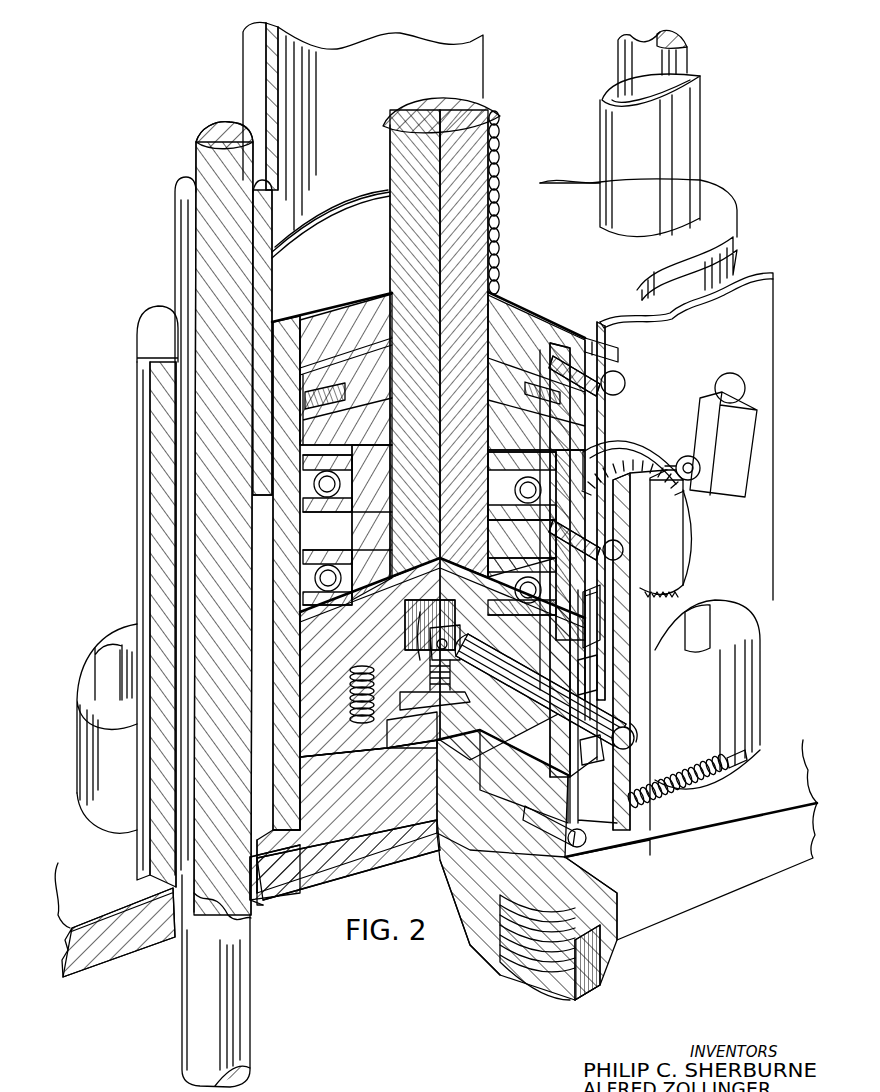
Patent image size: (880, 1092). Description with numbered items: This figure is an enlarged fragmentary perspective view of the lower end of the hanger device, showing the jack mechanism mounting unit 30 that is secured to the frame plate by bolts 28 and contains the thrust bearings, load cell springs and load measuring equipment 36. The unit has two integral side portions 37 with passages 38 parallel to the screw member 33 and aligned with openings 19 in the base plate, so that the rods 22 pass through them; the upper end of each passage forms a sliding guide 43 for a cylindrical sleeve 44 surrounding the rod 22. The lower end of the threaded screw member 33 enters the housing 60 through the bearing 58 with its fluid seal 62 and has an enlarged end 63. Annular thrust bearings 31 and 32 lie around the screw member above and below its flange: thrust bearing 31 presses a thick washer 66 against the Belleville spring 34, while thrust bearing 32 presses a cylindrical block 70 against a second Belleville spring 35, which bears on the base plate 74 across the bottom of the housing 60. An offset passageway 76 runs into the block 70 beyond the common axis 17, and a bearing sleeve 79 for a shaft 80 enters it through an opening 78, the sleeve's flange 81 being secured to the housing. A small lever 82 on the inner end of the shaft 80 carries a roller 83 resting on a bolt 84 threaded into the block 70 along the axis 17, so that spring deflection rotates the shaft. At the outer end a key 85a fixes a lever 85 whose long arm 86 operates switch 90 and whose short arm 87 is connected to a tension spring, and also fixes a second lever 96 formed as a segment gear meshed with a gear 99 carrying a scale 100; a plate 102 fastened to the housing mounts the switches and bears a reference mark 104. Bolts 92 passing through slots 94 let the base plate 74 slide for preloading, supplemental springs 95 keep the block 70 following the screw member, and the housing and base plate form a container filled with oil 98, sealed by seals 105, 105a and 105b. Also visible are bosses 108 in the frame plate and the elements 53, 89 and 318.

The common axis 17 is at (470, 265).
The openings 19 is at (270, 892).
The rods 22 is at (188, 982).
The bolts 28 is at (95, 652).
The jack mechanism mounting unit 30 is at (546, 172).
The thrust bearing 31 is at (352, 484).
The thrust bearing 32 is at (352, 560).
The threaded screw member 33 is at (492, 118).
The Belleville spring 34 is at (560, 352).
The Belleville spring 35 is at (487, 770).
The load measuring equipment 36 is at (694, 569).
The side portions 37 is at (728, 210).
The passages 38 is at (172, 582).
The sliding guide 43 is at (176, 378).
The cylindrical sleeve 44 is at (185, 283).
The cylinder 53 is at (258, 60).
The bearing 58 is at (492, 304).
The housing 60 is at (586, 432).
The fluid seal 62 is at (500, 330).
The enlarged end 63 is at (430, 509).
The thick washer 66 is at (600, 445).
The cylindrical block 70 is at (442, 659).
The base plate 74 is at (360, 807).
The offset passageway 76 is at (462, 605).
The opening 78 is at (560, 778).
The bearing sleeve 79 is at (359, 809).
The shaft 80 is at (544, 691).
The flange 81 is at (600, 645).
The small lever 82 is at (432, 615).
The roller 83 is at (405, 625).
The bolt 84 is at (420, 700).
The lever 85 is at (675, 790).
The key 85a is at (634, 730).
The long arm 86 is at (640, 545).
The short arm 87 is at (640, 830).
The spring anchor pin 89 is at (712, 780).
The switch 90 is at (760, 466).
The bolts 92 is at (520, 878).
The slots 94 is at (580, 877).
The supplemental springs 95 is at (349, 700).
The second lever 96 is at (605, 618).
The oil 98 is at (330, 395).
The gear 99 is at (690, 598).
The scale 100 is at (678, 500).
The plate 102 is at (773, 332).
The mark 104 is at (640, 458).
The seal 105 is at (597, 667).
The seal 105a is at (603, 748).
The seal 105b is at (552, 822).
The bosses 108 is at (600, 962).
The ball 318 is at (735, 364).